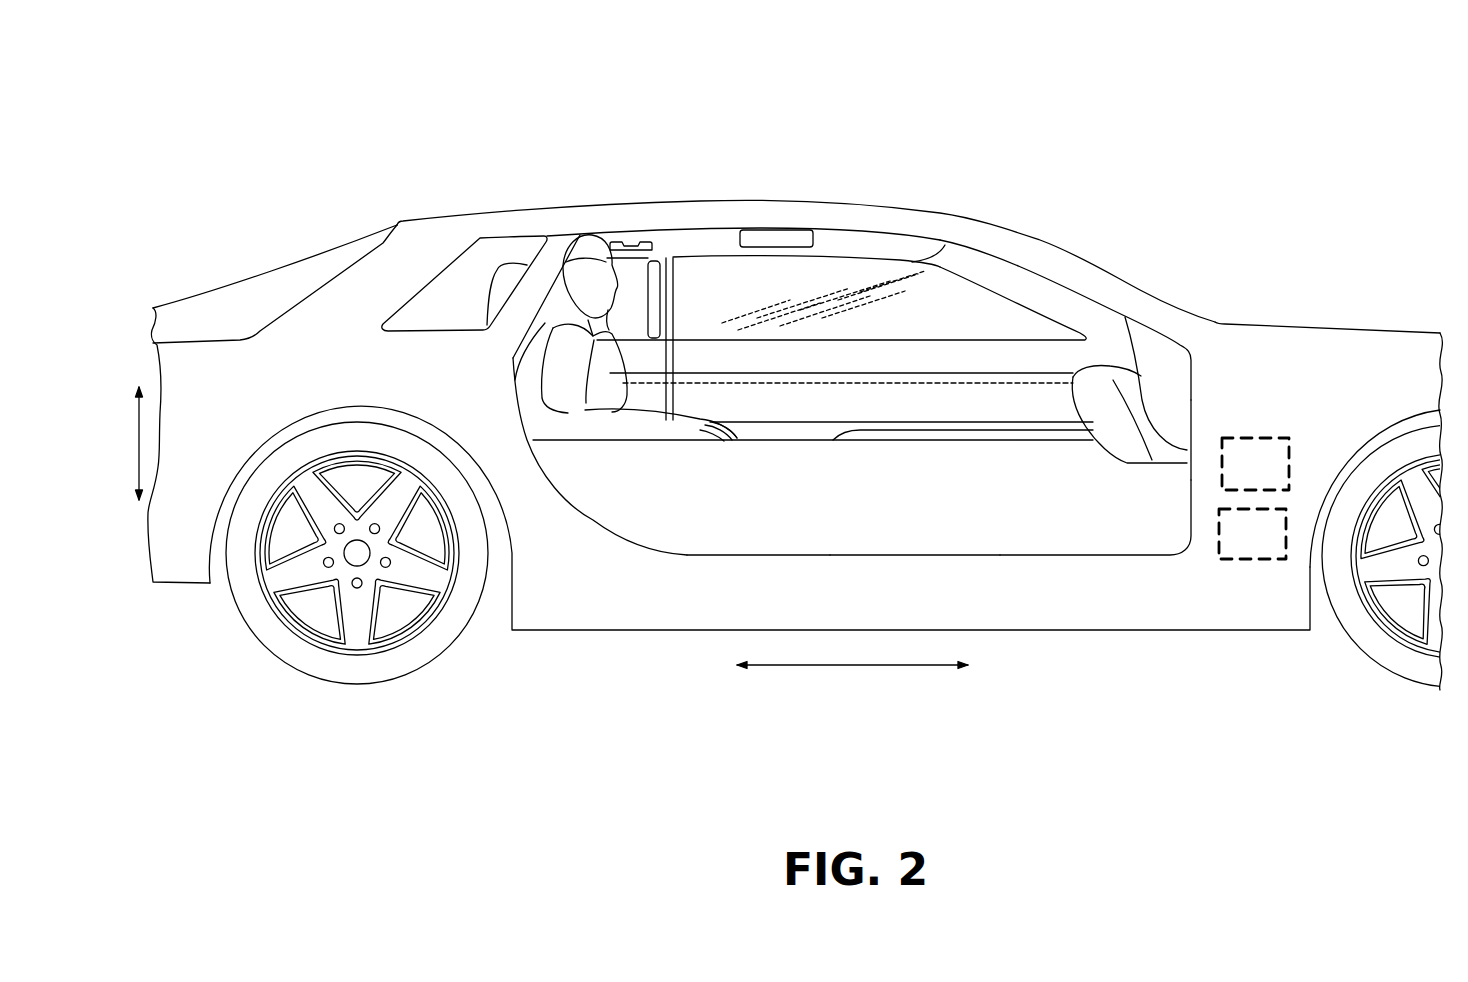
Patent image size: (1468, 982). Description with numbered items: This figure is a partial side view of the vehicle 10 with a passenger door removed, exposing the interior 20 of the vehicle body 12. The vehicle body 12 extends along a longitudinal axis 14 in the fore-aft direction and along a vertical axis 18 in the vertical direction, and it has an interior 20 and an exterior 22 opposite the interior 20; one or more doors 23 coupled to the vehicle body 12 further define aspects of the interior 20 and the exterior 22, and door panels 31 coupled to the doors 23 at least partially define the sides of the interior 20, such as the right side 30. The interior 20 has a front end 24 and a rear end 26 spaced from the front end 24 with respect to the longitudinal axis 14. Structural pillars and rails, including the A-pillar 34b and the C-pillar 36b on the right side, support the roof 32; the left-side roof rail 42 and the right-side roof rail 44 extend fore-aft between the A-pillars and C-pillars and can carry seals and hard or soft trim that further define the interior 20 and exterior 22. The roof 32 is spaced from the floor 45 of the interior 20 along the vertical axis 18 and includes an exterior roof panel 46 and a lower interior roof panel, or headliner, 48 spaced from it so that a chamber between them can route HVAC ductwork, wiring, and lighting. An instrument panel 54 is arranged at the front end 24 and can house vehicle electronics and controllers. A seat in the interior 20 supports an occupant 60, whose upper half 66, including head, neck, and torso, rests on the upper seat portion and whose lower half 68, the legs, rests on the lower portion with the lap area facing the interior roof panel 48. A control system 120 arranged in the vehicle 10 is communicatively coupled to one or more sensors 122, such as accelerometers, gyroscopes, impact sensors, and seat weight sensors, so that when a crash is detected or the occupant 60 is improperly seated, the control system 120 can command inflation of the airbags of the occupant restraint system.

The vehicle 10 is at (1107, 100).
The vehicle body 12 is at (1287, 350).
The longitudinal axis 14 is at (856, 672).
The vertical axis 18 is at (139, 445).
The interior 20 is at (851, 257).
The exterior 22 is at (1372, 310).
The door 23 is at (985, 306).
The front end of the interior 24 is at (1156, 477).
The rear end of the interior 26 is at (585, 476).
The right side of the interior 30 is at (787, 540).
The door panel 31 is at (777, 377).
The roof 32 is at (492, 198).
The A-pillar 34b is at (1068, 273).
The C-pillar 36b is at (432, 262).
The left-side roof rail 42 is at (832, 258).
The right-side roof rail 44 is at (793, 208).
The floor 45 is at (923, 548).
The exterior roof panel 46 is at (546, 204).
The interior roof panel 48 is at (684, 240).
The instrument panel 54 is at (1112, 376).
The occupant 60 is at (590, 238).
The upper half of the occupant 66 is at (627, 360).
The lower half of the occupant 68 is at (713, 411).
The control system 120 is at (1258, 438).
The sensor 122 is at (1247, 560).